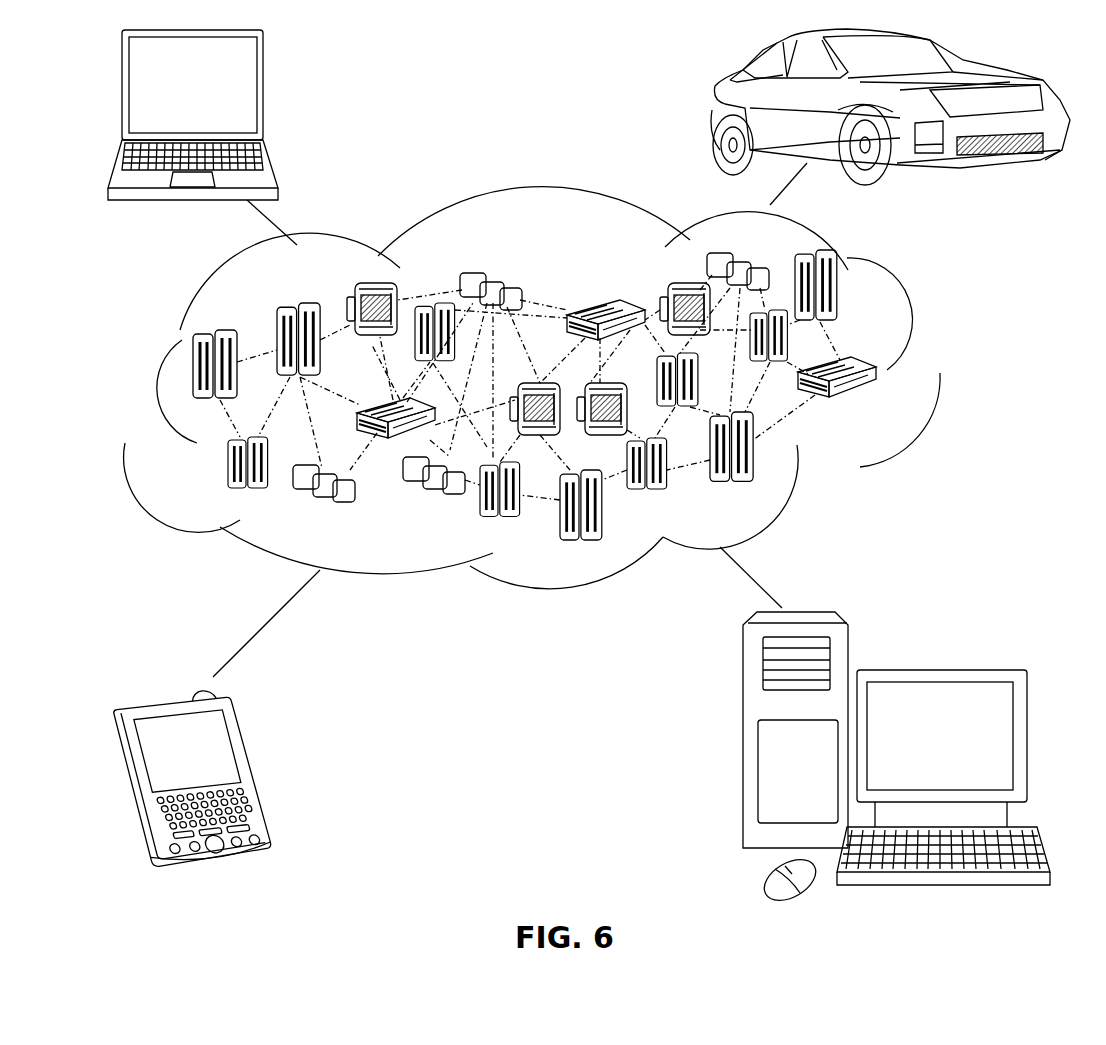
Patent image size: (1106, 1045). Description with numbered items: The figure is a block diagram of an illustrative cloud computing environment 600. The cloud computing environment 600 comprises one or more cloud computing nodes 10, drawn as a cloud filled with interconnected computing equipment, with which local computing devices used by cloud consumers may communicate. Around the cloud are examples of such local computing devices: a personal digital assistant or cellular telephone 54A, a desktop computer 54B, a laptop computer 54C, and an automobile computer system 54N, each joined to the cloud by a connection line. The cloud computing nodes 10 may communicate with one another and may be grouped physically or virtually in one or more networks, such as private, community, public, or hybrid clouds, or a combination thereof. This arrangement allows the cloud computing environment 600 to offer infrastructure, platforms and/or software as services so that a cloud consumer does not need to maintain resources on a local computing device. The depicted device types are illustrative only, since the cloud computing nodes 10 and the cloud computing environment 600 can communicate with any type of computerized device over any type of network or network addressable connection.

The personal digital assistant (PDA) or cellular telephone 54A is at (255, 763).
The desktop computer 54B is at (937, 668).
The laptop computer 54C is at (263, 94).
The automobile computer system 54N is at (713, 110).
The cloud computing node 10 is at (884, 408).
The cloud computing environment 600 is at (938, 373).